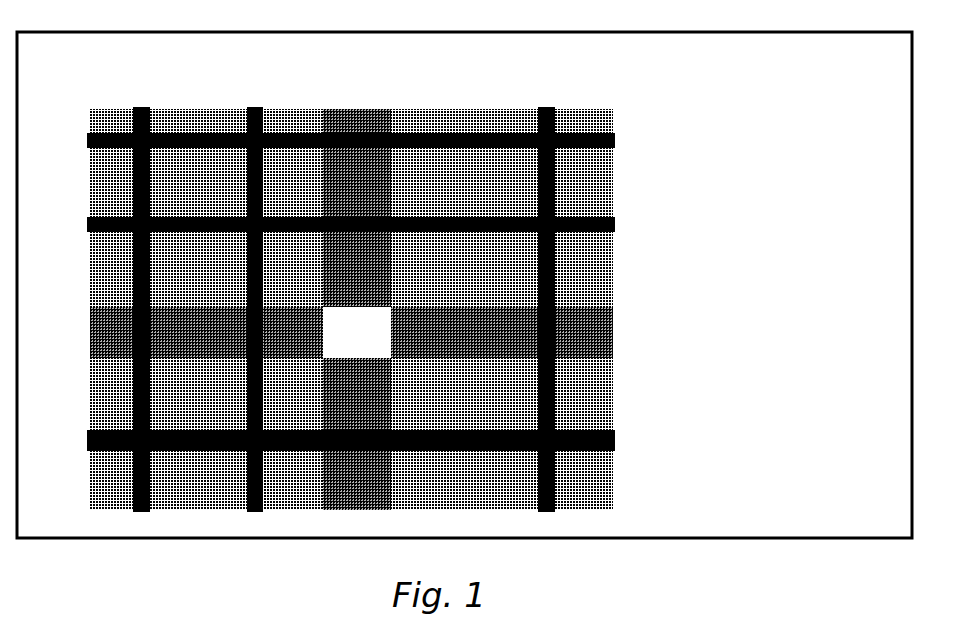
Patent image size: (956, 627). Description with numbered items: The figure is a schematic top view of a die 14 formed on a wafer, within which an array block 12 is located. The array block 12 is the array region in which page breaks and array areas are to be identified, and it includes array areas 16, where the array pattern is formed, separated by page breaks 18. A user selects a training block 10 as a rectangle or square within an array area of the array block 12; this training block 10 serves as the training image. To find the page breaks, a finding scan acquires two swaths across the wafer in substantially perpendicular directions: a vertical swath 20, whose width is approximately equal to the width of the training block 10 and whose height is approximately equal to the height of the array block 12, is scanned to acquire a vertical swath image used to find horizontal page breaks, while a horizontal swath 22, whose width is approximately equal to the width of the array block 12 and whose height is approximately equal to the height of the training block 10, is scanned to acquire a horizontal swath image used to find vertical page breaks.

The training block 10 is at (369, 341).
The array block 12 is at (667, 162).
The die 14 is at (806, 225).
The array areas 16 is at (480, 267).
The page breaks 18 is at (553, 292).
The vertical swath 20 is at (367, 110).
The horizontal swath 22 is at (592, 327).